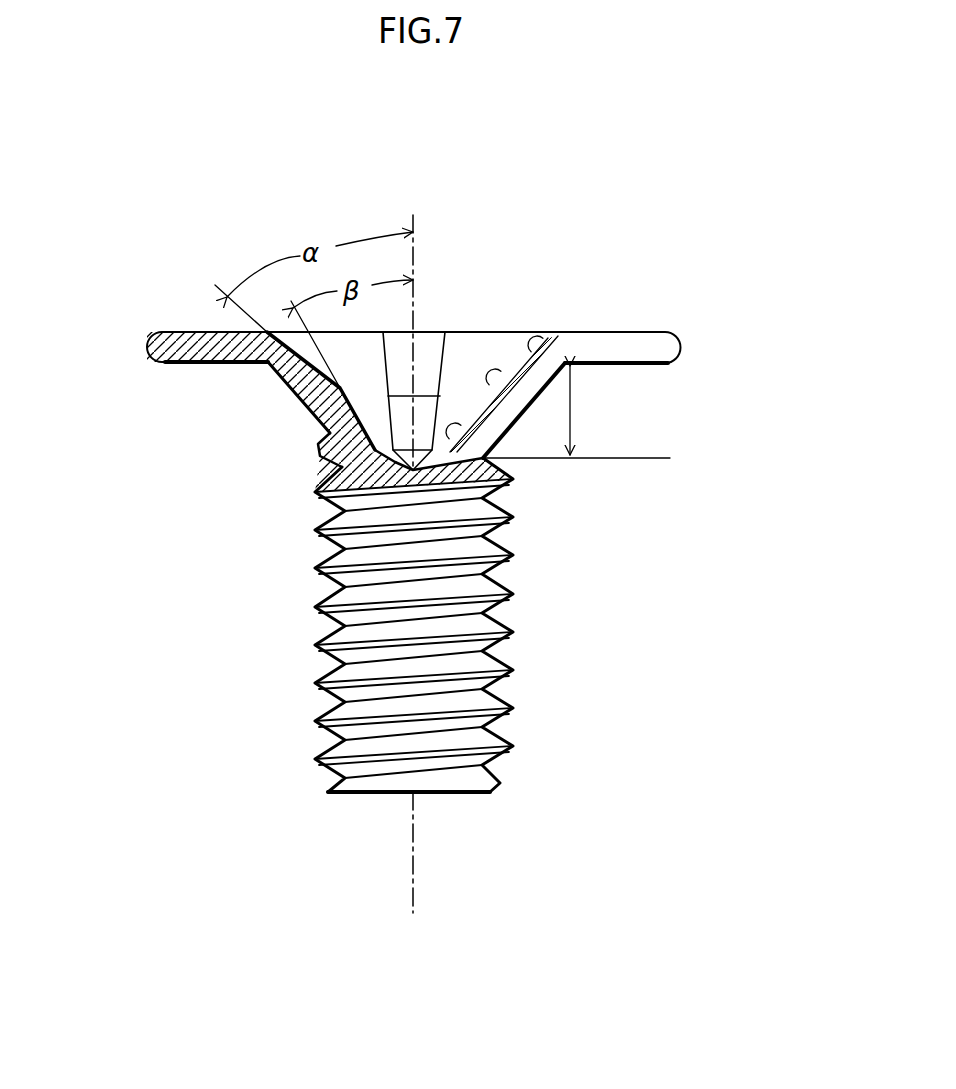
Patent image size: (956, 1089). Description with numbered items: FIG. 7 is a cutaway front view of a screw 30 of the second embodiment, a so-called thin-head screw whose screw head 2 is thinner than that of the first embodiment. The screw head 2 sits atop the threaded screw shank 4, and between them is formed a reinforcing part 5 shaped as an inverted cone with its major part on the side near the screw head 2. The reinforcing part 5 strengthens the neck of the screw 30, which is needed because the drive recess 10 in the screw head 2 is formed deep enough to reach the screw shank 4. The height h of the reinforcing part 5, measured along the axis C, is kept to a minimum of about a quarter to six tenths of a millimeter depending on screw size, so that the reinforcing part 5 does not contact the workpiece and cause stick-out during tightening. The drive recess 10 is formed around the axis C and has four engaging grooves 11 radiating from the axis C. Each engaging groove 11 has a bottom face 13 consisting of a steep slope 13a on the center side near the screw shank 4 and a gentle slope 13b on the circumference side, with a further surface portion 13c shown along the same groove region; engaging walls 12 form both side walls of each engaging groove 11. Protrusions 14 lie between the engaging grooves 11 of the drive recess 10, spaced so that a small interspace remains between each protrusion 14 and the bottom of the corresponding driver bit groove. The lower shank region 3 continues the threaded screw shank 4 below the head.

The screw 30 is at (92, 288).
The screw head 2 is at (396, 328).
The reinforcing part 5 is at (358, 400).
The engaging wall 12 is at (320, 443).
The protrusion 14 is at (335, 468).
The shank 3 is at (409, 625).
The screw shank 4 is at (475, 663).
The drive recess 10 is at (433, 320).
The engaging groove 11 is at (609, 327).
The bottom face 13 is at (645, 383).
The steep slope 13a is at (487, 462).
The gentle slope 13b is at (610, 345).
The thin layer 13c is at (546, 352).
The axis C is at (419, 525).
The height of the reinforcing part h is at (583, 410).